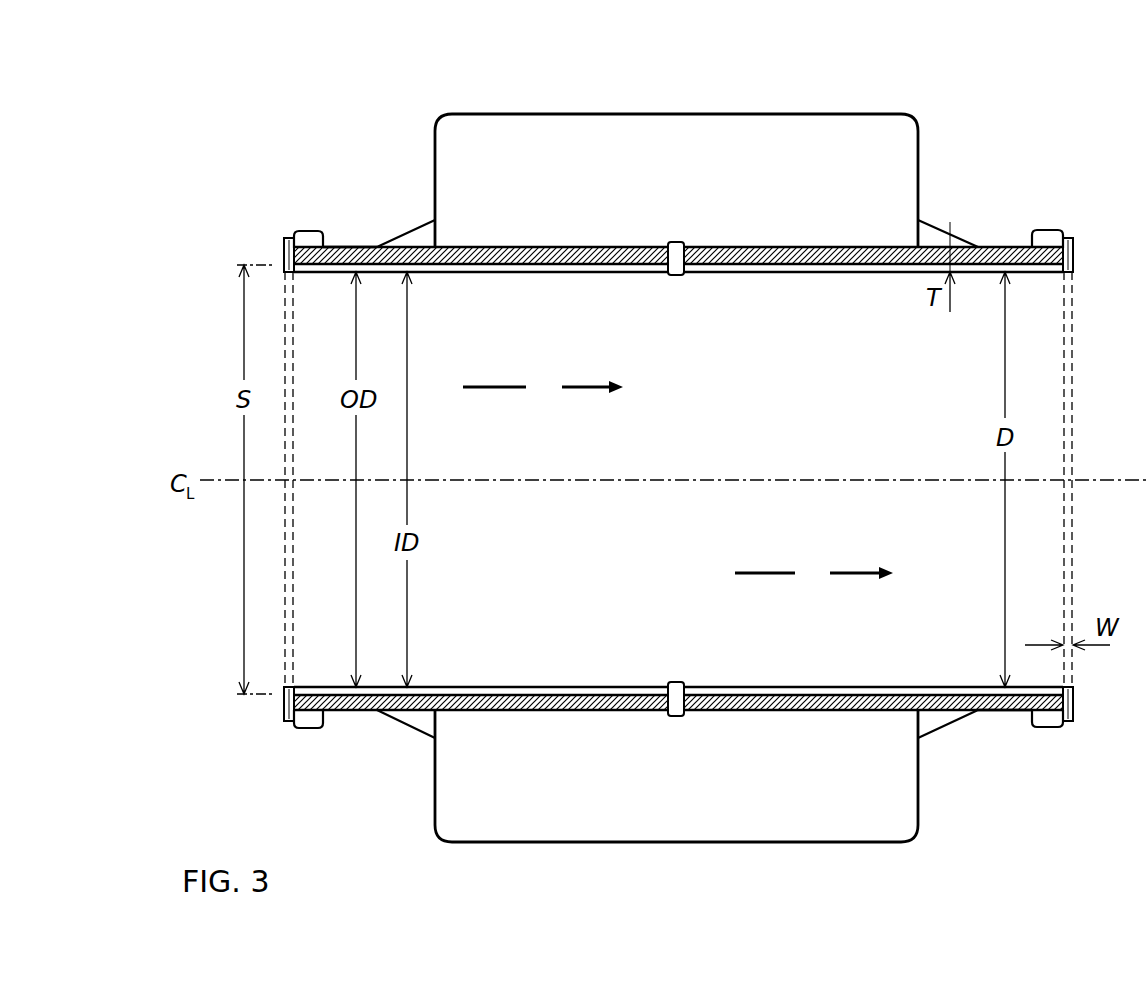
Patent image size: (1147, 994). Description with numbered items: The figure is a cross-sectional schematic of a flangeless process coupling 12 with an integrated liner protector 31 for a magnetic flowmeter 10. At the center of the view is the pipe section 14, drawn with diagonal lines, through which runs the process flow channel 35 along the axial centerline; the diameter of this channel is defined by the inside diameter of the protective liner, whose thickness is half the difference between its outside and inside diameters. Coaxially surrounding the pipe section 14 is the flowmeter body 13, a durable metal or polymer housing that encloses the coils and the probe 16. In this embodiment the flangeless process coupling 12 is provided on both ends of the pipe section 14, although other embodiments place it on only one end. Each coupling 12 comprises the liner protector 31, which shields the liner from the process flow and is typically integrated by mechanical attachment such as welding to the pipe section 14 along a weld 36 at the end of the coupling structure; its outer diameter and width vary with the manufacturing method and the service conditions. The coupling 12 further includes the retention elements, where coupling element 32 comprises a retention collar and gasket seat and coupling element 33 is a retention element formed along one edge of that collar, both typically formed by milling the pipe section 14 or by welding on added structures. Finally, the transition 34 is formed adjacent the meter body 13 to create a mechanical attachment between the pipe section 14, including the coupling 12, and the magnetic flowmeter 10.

The magnetic flowmeter 10 is at (930, 68).
The flangeless process coupling 12 is at (305, 170).
The flowmeter body 13 is at (442, 116).
The pipe section 14 is at (525, 263).
The probe 16 is at (677, 276).
The liner protector 31 is at (888, 271).
The coupling element 32 is at (300, 233).
The coupling element 33 is at (340, 247).
The transition 34 is at (926, 236).
The process flow channel 35 is at (678, 481).
The weld 36 is at (1072, 721).